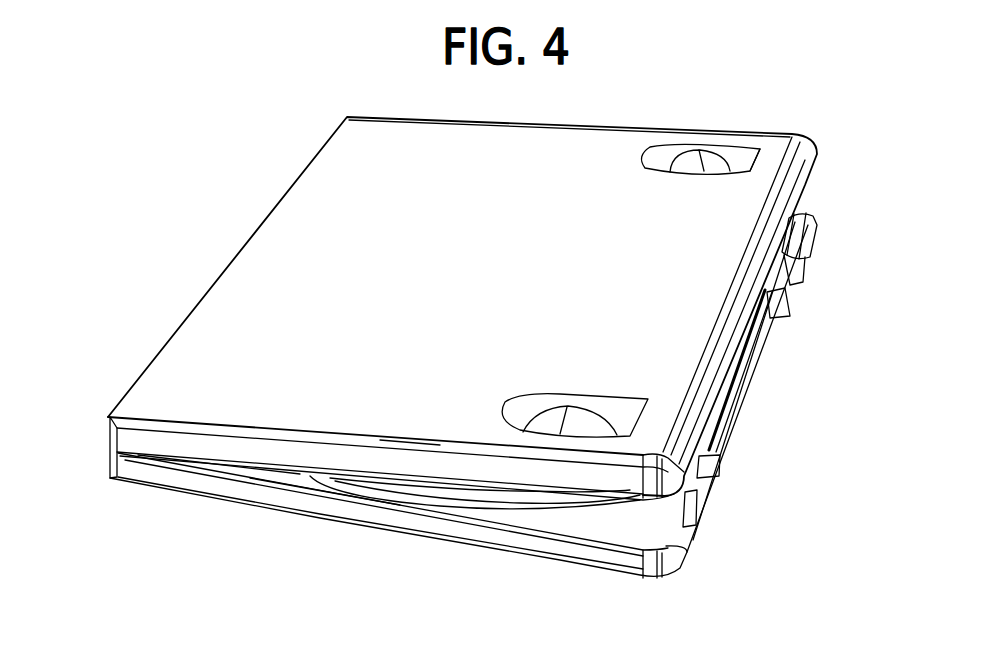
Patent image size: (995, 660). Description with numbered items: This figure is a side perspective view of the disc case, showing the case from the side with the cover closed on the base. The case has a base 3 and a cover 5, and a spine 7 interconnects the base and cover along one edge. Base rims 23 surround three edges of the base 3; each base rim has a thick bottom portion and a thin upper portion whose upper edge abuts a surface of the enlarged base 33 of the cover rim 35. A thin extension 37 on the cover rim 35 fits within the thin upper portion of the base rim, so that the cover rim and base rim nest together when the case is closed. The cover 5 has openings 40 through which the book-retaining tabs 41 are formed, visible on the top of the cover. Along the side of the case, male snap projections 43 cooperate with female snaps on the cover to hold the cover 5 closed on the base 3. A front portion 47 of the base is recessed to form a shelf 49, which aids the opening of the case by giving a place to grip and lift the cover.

The base 3 is at (223, 499).
The cover 5 is at (462, 280).
The spine 7 is at (106, 438).
The base rims 23 is at (325, 502).
The enlarged base of cover rim 33 is at (344, 462).
The cover rim 35 is at (410, 455).
The thin extension 37 is at (247, 467).
The openings 40 is at (691, 147).
The book-retaining tabs 41 is at (733, 157).
The male snap projections 43 is at (697, 497).
The front portion of the base 47 is at (735, 390).
The shelf 49 is at (762, 343).